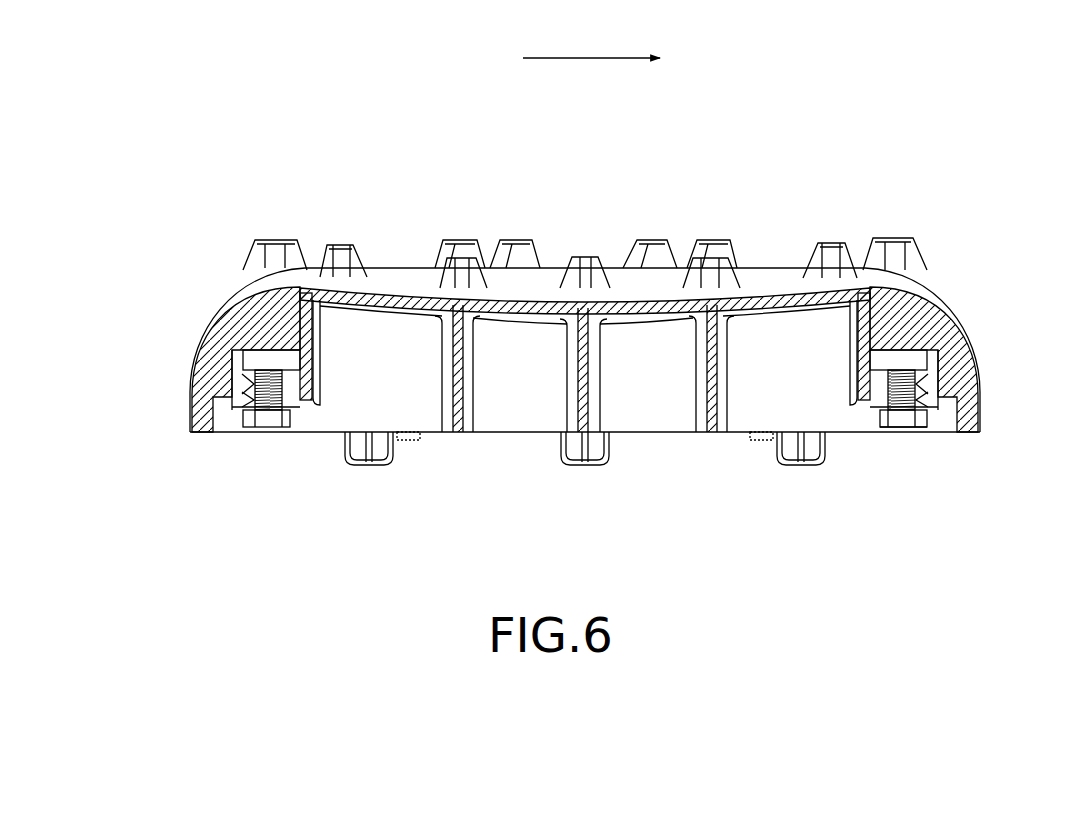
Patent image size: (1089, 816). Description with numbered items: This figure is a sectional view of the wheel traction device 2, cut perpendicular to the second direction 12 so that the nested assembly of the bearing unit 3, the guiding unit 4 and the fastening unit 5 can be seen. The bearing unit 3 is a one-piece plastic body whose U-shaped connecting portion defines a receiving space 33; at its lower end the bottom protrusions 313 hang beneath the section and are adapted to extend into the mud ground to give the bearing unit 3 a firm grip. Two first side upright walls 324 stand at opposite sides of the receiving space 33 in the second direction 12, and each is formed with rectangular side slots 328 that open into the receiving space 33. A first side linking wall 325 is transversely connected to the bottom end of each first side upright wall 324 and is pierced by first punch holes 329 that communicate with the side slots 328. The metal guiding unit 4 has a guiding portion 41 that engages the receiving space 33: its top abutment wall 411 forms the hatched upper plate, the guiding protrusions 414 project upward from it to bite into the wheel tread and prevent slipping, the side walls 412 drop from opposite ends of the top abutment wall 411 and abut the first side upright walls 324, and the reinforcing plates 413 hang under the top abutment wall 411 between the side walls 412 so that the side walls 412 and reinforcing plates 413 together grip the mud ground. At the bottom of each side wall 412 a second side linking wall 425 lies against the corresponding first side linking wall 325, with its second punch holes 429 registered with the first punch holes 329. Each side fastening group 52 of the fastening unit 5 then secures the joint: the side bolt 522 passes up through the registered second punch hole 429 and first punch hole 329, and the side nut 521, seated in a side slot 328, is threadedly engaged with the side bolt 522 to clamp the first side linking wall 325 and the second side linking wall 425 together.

The wheel traction device 2 is at (834, 122).
The bearing unit 3 is at (960, 293).
The guiding unit 4 is at (618, 222).
The fastening unit 5 is at (932, 428).
The second direction 12 is at (593, 57).
The receiving space 33 is at (262, 360).
The guiding portion 41 is at (537, 273).
The side fastening group 52 is at (235, 425).
The bottom protrusions 313 is at (582, 454).
The first side upright walls 324 is at (258, 357).
The first side linking walls 325 is at (236, 386).
The side slots 328 is at (292, 315).
The first punch holes 329 is at (238, 399).
The top abutment wall 411 is at (637, 315).
The side walls 412 is at (306, 356).
The reinforcing plates 413 is at (460, 375).
The guiding protrusions 414 is at (462, 265).
The second side linking walls 425 is at (292, 405).
The second punch holes 429 is at (290, 408).
The side nut 521 is at (898, 355).
The side bolt 522 is at (905, 420).